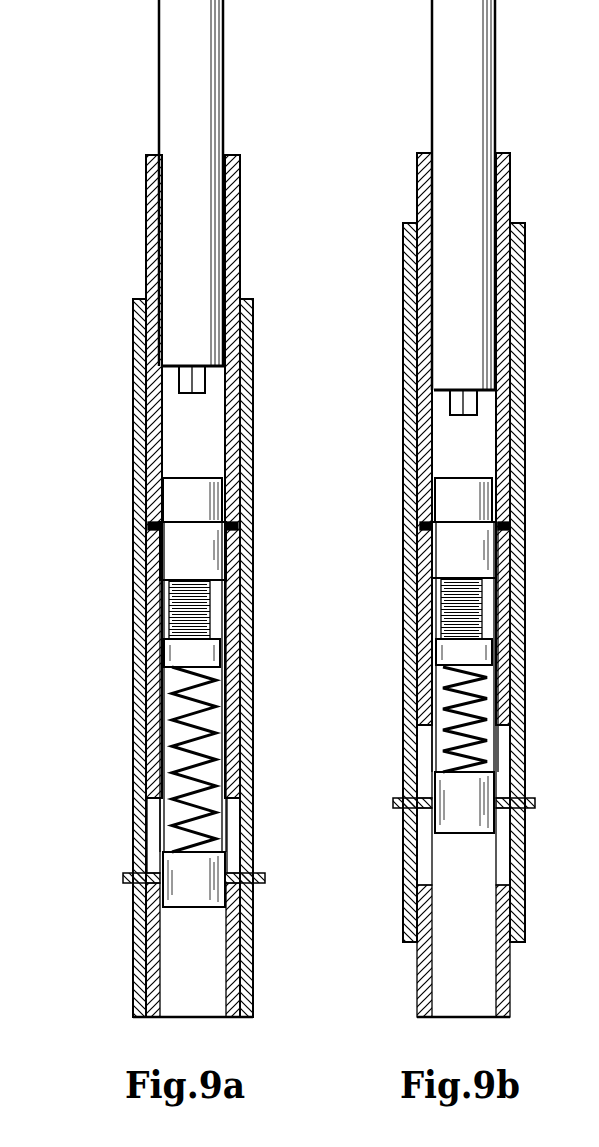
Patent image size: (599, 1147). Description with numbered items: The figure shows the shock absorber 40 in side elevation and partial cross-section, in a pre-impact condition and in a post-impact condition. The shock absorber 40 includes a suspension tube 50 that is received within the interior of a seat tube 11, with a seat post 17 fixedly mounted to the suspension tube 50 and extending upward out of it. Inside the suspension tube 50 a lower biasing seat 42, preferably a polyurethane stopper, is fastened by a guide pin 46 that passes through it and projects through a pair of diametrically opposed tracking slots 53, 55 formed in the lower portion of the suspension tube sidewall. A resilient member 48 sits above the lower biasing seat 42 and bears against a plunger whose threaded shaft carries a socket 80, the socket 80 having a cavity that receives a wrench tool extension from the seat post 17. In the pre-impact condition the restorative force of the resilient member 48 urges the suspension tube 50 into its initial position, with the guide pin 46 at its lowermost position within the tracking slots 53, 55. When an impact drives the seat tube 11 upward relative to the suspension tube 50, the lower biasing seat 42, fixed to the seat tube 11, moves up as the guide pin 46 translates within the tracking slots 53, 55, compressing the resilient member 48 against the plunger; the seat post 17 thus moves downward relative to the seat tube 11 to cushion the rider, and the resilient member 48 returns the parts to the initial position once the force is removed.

In FIG. 9a, the seat tube 11 is at (243, 945).
In FIG. 9b, the seat tube 11 is at (512, 918).
In FIG. 9a, the seat post 17 is at (198, 70).
In FIG. 9b, the seat post 17 is at (469, 94).
In FIG. 9a, the shock absorber 40 is at (120, 609).
In FIG. 9b, the shock absorber 40 is at (386, 590).
In FIG. 9a, the lower biasing seat 42 is at (188, 887).
In FIG. 9b, the lower biasing seat 42 is at (462, 787).
In FIG. 9a, the guide pin 46 is at (257, 877).
In FIG. 9b, the guide pin 46 is at (535, 798).
In FIG. 9a, the resilient member 48 is at (207, 720).
In FIG. 9b, the resilient member 48 is at (487, 707).
In FIG. 9a, the suspension tube 50 is at (233, 318).
In FIG. 9b, the suspension tube 50 is at (498, 250).
In FIG. 9a, the tracking slot 53 is at (153, 813).
In FIG. 9b, the tracking slot 53 is at (425, 852).
In FIG. 9a, the tracking slot 55 is at (233, 823).
In FIG. 9b, the tracking slot 55 is at (505, 833).
In FIG. 9a, the socket 80 is at (188, 496).
In FIG. 9b, the socket 80 is at (473, 500).